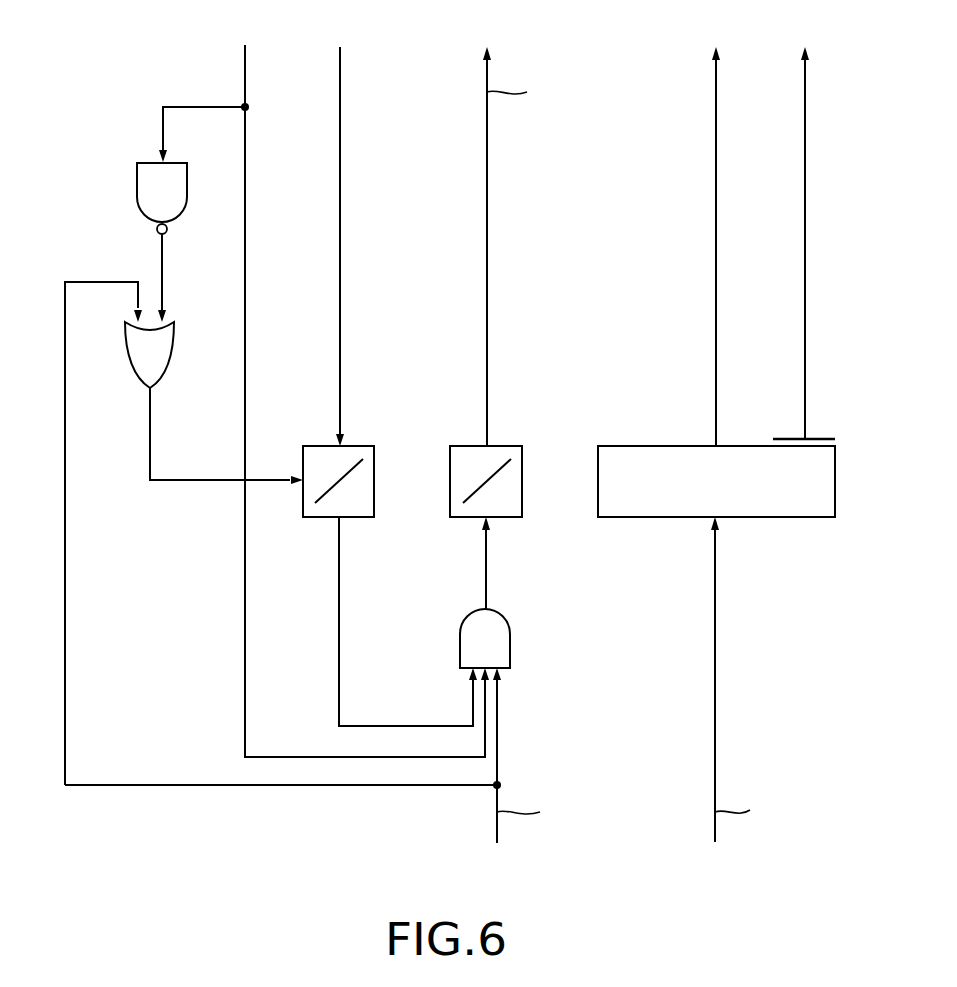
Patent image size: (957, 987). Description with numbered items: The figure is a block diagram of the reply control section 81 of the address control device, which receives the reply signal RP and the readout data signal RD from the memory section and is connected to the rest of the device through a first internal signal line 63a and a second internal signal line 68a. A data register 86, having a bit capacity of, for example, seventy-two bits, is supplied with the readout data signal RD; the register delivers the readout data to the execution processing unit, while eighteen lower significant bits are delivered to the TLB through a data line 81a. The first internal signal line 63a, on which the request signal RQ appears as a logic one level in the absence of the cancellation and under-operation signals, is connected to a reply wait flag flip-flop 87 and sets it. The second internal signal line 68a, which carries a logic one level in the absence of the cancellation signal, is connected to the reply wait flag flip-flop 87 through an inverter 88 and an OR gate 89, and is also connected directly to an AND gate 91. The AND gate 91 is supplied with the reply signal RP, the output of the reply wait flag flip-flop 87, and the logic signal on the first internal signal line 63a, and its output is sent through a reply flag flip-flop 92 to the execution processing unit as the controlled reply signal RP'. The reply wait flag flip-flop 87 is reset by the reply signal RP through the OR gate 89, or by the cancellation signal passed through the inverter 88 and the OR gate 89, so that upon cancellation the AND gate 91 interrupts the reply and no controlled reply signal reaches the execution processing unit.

The reply control section 81 is at (261, 875).
The second internal signal line 68a is at (245, 70).
The first internal signal line 63a is at (340, 68).
The inverter 88 is at (137, 196).
The OR gate 89 is at (170, 368).
The reply wait flag flip-flop 87 is at (363, 443).
The reply flag flip-flop 92 is at (508, 443).
The AND gate 91 is at (510, 640).
The data register 86 is at (658, 446).
The data line 81a is at (805, 88).